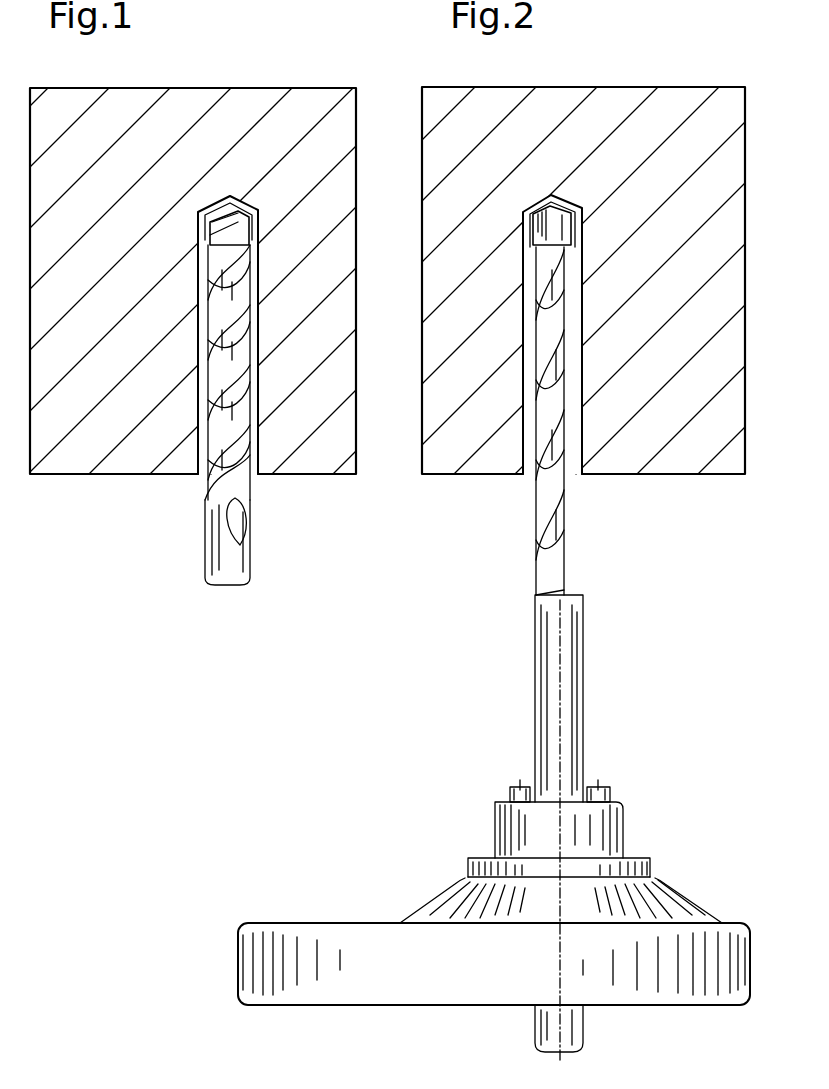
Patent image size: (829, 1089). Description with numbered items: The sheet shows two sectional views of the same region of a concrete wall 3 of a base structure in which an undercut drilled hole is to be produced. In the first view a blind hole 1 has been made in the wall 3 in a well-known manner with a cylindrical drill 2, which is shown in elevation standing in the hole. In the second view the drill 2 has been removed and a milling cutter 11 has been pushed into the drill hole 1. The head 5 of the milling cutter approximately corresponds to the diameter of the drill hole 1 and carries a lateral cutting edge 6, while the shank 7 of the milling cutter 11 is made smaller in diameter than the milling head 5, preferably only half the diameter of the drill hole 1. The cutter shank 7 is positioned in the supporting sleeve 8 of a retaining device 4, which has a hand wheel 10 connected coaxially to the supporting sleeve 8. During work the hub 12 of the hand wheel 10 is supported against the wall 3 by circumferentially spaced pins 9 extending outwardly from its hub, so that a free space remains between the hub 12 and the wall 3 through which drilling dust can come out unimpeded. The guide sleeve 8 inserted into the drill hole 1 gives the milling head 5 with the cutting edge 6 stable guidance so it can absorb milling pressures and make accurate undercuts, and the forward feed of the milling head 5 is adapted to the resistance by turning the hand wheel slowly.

In FIG. 1, the blind hole 1 is at (203, 412).
In FIG. 2, the blind hole 1 is at (522, 452).
In FIG. 1, the cylindrical drill 2 is at (240, 560).
In FIG. 1, the concrete wall 3 is at (350, 535).
In FIG. 2, the retaining device 4 is at (460, 876).
In FIG. 2, the milling head 5 is at (551, 196).
In FIG. 2, the lateral cutting edge 6 is at (581, 225).
In FIG. 2, the cutter shank 7 is at (547, 500).
In FIG. 2, the supporting sleeve 8 is at (568, 673).
In FIG. 2, the pins 9 is at (505, 790).
In FIG. 2, the hand wheel 10 is at (702, 945).
In FIG. 2, the milling cutter 11 is at (528, 513).
In FIG. 2, the hub 12 is at (610, 838).